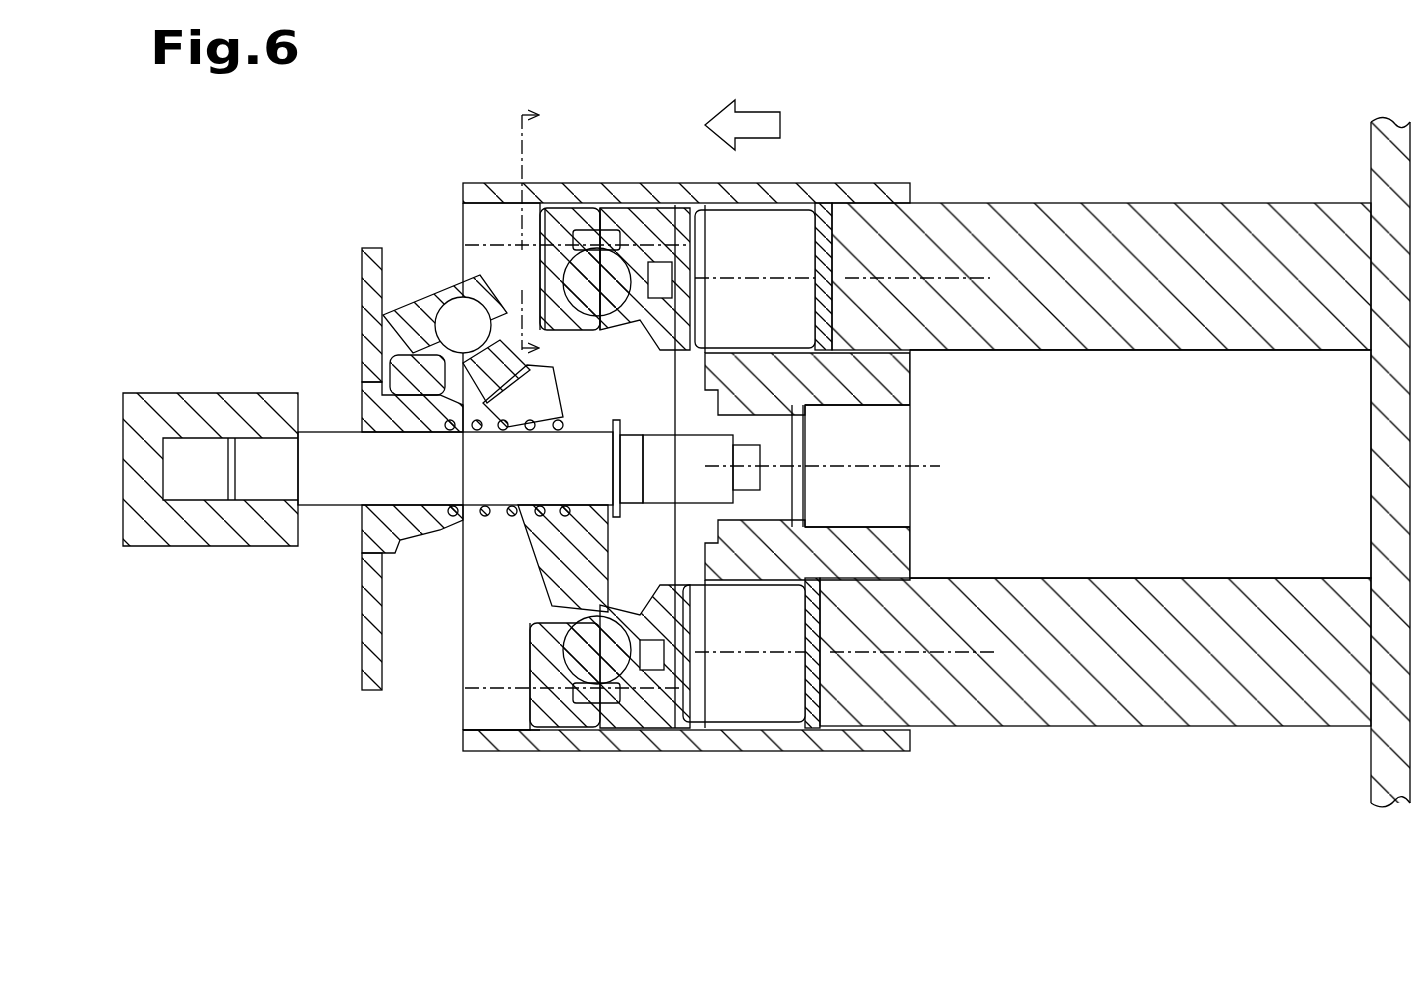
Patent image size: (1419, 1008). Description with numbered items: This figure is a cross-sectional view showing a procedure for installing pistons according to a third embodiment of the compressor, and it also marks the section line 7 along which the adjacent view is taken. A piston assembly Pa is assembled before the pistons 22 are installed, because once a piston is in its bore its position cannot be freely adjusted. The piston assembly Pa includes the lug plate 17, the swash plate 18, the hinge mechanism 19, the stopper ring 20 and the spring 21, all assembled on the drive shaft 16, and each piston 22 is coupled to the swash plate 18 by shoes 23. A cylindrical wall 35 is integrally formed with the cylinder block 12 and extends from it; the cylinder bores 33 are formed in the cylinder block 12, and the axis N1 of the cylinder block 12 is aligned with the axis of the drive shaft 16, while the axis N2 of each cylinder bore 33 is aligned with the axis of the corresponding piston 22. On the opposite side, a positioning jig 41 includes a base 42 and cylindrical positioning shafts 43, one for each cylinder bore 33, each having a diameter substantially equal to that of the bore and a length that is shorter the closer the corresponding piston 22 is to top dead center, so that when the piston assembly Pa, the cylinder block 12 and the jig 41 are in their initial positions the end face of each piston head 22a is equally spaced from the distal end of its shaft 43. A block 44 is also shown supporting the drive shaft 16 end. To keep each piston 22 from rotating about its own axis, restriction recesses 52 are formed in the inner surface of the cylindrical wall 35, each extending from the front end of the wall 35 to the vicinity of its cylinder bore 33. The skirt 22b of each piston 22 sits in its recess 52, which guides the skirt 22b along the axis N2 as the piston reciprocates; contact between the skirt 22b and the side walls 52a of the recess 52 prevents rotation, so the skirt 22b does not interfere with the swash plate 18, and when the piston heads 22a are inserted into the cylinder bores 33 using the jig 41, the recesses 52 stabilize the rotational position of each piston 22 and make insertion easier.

The cylinder block 12 is at (865, 752).
The drive shaft 16 is at (332, 508).
The lug plate 17 is at (368, 692).
The swash plate 18 is at (540, 580).
The hinge mechanism 19 is at (440, 290).
The stopper ring 20 is at (612, 452).
The spring 21 is at (470, 518).
The piston 22 is at (657, 205).
The piston head 22a is at (820, 215).
The skirt 22b is at (556, 215).
The shoe 23 is at (612, 215).
The cylinder bore 33 is at (872, 212).
The cylindrical wall 35 is at (480, 752).
The positioning jig 41 is at (1371, 150).
The base 42 is at (1371, 440).
The positioning shaft 43 is at (1200, 352).
The support block 44 is at (160, 548).
The restriction recess 52 is at (470, 212).
The side wall 52a is at (520, 250).
The section line 7 is at (543, 224).
The piston assembly Pa is at (352, 190).
The axis of the cylinder block N1 is at (915, 466).
The axis of the cylinder bore N2 is at (960, 275).